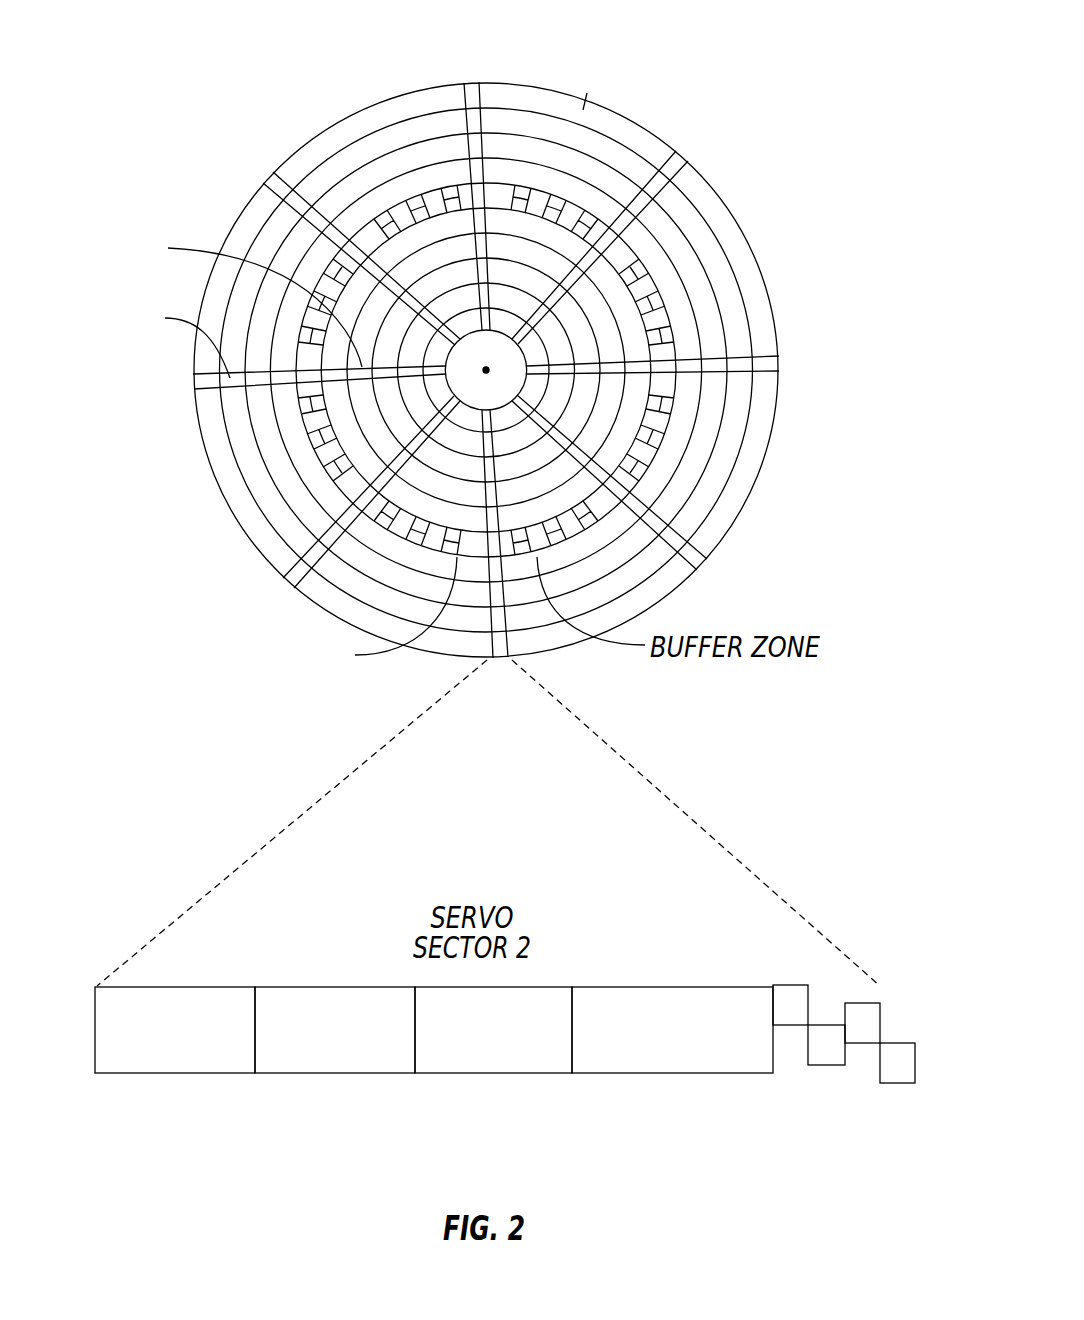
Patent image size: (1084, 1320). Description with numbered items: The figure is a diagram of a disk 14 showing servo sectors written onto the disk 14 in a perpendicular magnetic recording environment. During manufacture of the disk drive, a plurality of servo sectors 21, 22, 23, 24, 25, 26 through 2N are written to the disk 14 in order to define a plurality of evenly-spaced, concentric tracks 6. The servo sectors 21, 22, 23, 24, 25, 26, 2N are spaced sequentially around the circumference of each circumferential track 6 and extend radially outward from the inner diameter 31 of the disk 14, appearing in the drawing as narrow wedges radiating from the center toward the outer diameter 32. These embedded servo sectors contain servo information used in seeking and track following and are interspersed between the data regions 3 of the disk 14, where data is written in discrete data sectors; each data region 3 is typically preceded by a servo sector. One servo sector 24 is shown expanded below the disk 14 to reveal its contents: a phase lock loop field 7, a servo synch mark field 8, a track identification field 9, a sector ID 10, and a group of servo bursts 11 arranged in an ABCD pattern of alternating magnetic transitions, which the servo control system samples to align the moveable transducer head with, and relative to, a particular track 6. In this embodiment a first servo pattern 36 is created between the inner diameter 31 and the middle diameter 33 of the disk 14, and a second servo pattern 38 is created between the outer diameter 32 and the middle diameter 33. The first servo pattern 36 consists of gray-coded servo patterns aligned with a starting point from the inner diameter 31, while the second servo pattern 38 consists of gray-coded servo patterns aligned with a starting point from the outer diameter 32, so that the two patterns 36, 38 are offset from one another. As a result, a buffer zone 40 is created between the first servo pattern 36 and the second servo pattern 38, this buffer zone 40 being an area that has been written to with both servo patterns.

The disk 14 is at (302, 55).
The data region 3 is at (412, 138).
The track 6 is at (558, 135).
The servo sector 21 is at (469, 90).
The servo sector 22 is at (778, 357).
The servo sector 23 is at (703, 567).
The servo sector 24 is at (500, 660).
The servo sector 25 is at (290, 583).
The servo sector 26 is at (194, 382).
The servo sector 2N is at (272, 177).
The inner diameter (ID) 31 is at (522, 357).
The outer diameter (OD) 32 is at (782, 388).
The middle diameter (MD) 33 is at (527, 363).
The first servo pattern 36 is at (247, 300).
The second servo pattern 38 is at (180, 340).
The buffer zone 40 is at (388, 616).
The phase lock loop (PLL) field 7 is at (123, 1073).
The servo synch mark (SSM) field 8 is at (279, 1073).
The track identification (TKID) field 9 is at (440, 1073).
The sector ID 10 is at (601, 1073).
The servo bursts 11 is at (773, 1090).